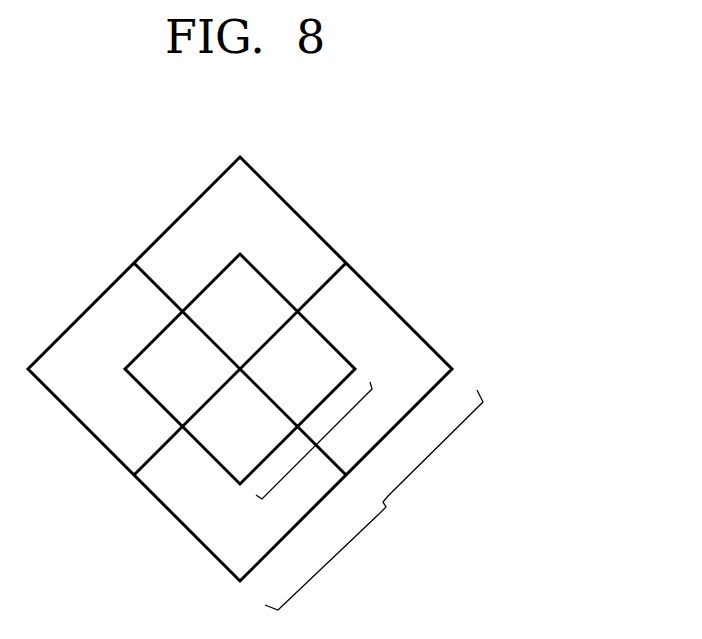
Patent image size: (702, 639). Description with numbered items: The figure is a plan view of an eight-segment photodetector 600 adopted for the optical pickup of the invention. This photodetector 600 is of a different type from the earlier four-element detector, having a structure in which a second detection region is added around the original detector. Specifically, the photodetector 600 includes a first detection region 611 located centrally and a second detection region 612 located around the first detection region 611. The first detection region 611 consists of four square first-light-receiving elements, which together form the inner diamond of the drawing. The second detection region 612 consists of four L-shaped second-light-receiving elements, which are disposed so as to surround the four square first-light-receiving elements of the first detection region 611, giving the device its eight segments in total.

The photodetector 600 is at (418, 222).
The first detection region 611 is at (318, 448).
The second detection region 612 is at (374, 500).